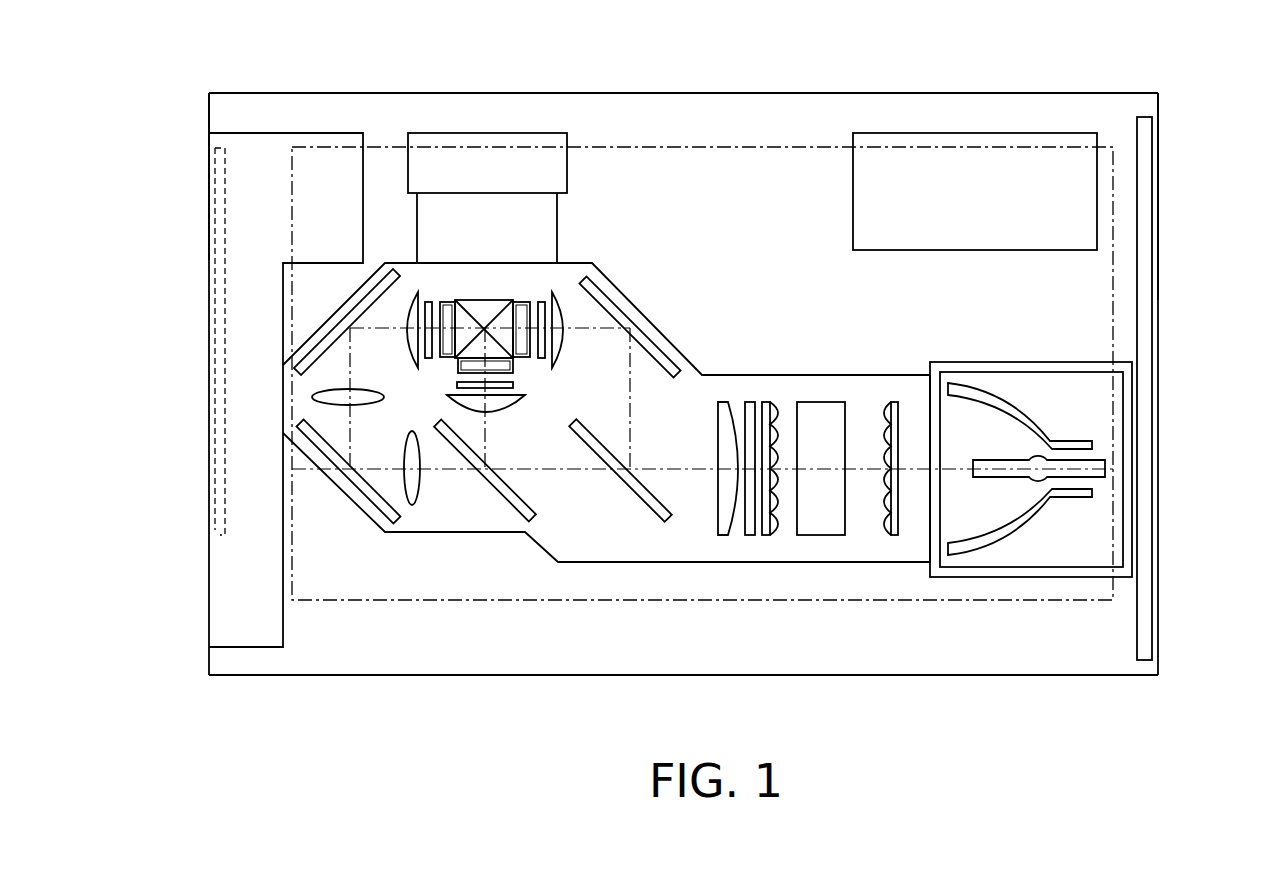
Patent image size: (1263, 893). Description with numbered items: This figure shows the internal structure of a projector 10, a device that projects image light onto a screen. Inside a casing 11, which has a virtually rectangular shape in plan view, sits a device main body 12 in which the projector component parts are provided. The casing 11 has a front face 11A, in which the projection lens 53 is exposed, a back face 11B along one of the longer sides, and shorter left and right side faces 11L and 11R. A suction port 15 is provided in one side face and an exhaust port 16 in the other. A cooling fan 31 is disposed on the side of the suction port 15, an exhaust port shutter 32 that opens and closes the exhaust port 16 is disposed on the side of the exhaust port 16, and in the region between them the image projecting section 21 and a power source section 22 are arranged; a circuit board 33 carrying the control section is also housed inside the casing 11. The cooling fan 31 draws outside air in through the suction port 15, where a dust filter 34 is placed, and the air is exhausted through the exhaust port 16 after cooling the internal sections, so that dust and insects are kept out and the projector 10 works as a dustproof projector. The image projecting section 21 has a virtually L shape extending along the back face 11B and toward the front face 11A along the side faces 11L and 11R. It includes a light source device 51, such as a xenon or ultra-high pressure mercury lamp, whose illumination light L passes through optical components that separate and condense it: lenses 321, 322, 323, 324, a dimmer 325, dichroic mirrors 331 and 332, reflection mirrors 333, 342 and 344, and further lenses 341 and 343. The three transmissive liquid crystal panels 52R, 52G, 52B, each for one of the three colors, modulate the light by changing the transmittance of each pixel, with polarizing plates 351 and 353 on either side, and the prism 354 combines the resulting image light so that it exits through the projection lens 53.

The projector 10 is at (681, 15).
The casing 11 is at (1158, 96).
The front face 11A is at (597, 93).
The back face 11B is at (689, 675).
The right side face 11R is at (208, 245).
The left side face 11L is at (1160, 198).
The device main body 12 is at (960, 87).
The suction port 15 is at (194, 166).
The exhaust port 16 is at (1169, 152).
The image projecting section 21 is at (695, 263).
The power source section 22 is at (853, 195).
The cooling fan 31 is at (270, 130).
The exhaust port shutter 32 is at (1143, 117).
The circuit board 33 is at (733, 147).
The dust filter 34 is at (215, 393).
The light source device 51 is at (946, 586).
The projection lens 53 is at (567, 157).
The illumination light L is at (867, 470).
The lens 321 is at (892, 402).
The lens 322 is at (770, 402).
The lens 323 is at (750, 402).
The lens 324 is at (722, 402).
The dimmer 325 is at (820, 402).
The dichroic mirror 331 is at (640, 505).
The dichroic mirror 332 is at (500, 490).
The reflection mirror 333 is at (645, 338).
The lens 341 is at (412, 490).
The reflection mirror 342 is at (318, 447).
The lens 343 is at (362, 400).
The reflection mirror 344 is at (335, 340).
The polarizing plate 351 is at (430, 302).
The polarizing plate 353 is at (447, 300).
The prism 354 is at (486, 298).
The liquid crystal panel 52R is at (417, 243).
The liquid crystal panel 52G is at (497, 406).
The liquid crystal panel 52B is at (557, 242).